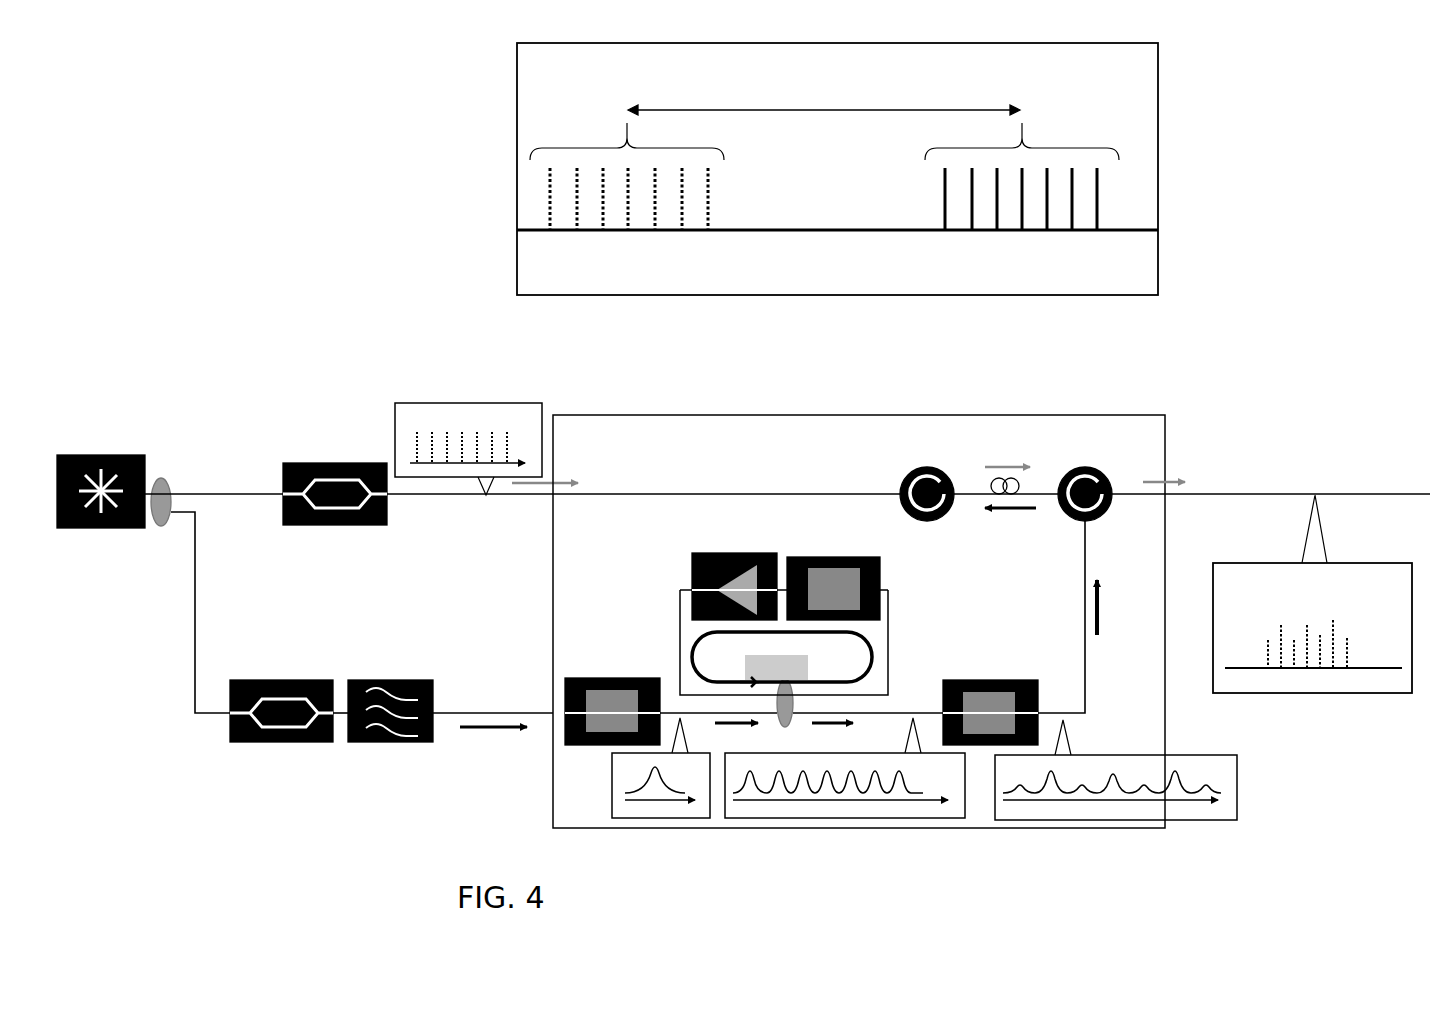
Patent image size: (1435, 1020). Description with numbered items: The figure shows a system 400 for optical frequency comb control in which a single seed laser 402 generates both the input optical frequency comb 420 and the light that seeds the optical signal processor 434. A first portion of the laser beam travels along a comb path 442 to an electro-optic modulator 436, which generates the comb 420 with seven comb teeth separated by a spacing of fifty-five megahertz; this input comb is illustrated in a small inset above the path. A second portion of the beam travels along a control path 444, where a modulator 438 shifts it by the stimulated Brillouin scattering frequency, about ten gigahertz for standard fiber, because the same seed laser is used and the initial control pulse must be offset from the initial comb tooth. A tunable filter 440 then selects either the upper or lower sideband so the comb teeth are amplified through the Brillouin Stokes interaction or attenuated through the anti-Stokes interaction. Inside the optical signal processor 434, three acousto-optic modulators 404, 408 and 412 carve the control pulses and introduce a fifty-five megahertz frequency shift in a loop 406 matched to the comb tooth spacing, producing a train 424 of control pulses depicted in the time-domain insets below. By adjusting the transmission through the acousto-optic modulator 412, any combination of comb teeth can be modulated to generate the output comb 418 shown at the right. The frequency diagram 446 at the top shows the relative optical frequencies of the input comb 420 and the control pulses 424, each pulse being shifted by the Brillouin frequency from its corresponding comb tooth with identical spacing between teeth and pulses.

The system 400 is at (1240, 311).
The seed laser 402 is at (115, 455).
The acousto-optic modulator 404 is at (621, 678).
The loop 406 is at (680, 600).
The acousto-optic modulator 408 is at (827, 559).
The acousto-optic modulator 412 is at (991, 678).
The output comb 418 is at (1333, 697).
The input optical frequency comb 420 is at (435, 403).
The train of control pulses 424 is at (780, 820).
The optical signal processor 434 is at (640, 415).
The electro-optic modulator 436 is at (316, 461).
The modulator 438 is at (265, 742).
The tunable filter 440 is at (372, 742).
The comb path 442 is at (208, 484).
The control path 444 is at (195, 616).
The frequency diagram 446 is at (517, 208).